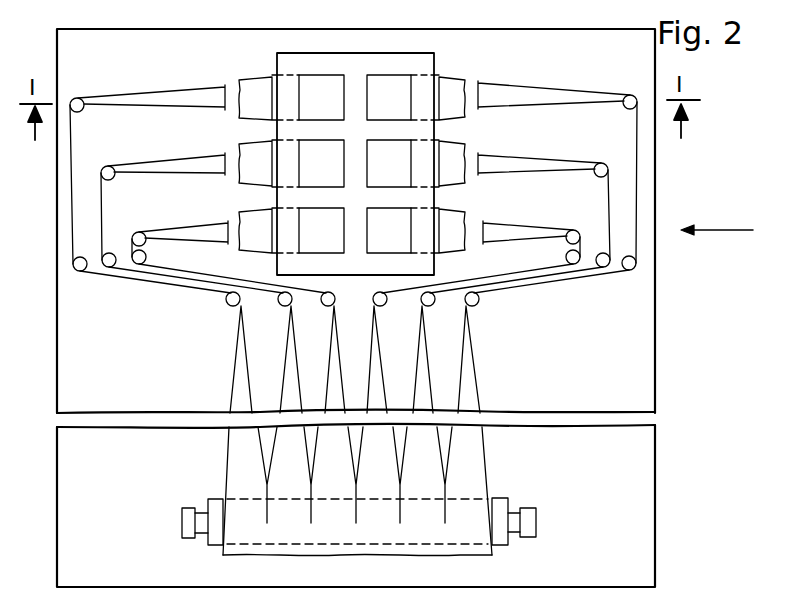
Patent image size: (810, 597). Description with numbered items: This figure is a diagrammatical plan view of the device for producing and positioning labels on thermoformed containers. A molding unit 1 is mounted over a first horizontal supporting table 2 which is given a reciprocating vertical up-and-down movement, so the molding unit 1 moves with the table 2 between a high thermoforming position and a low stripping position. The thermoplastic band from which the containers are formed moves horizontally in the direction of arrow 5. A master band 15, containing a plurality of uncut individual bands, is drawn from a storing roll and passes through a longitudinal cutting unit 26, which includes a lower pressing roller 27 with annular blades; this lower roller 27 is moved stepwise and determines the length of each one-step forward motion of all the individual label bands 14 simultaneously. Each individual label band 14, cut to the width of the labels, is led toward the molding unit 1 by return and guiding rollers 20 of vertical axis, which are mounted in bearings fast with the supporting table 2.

The molding unit 1 is at (436, 59).
The first horizontal supporting table 2 is at (645, 346).
The moving direction of thermoplastic band 5 is at (727, 229).
The individual label band 14 is at (529, 95).
The master band 15 is at (245, 552).
The return and guiding rollers 20 is at (84, 109).
The longitudinal cutting unit 26 is at (521, 501).
The lower pressing roller 27 is at (500, 540).